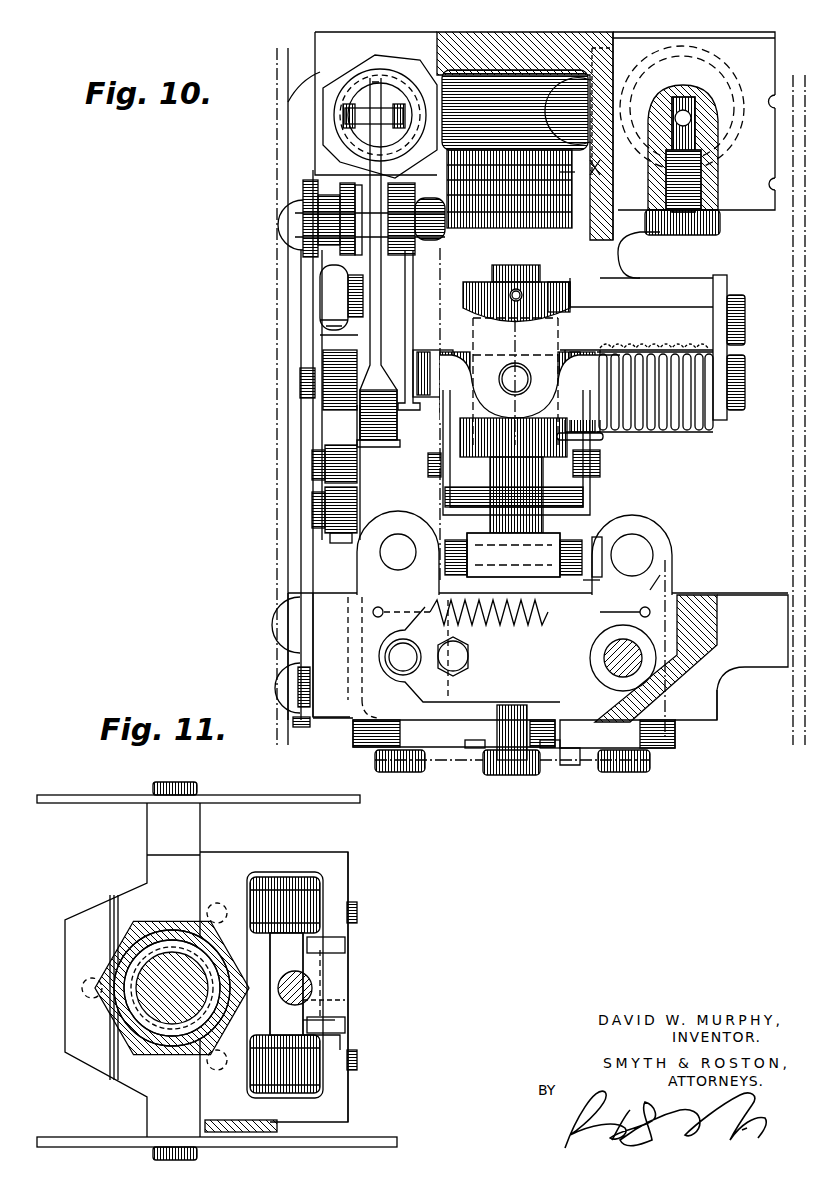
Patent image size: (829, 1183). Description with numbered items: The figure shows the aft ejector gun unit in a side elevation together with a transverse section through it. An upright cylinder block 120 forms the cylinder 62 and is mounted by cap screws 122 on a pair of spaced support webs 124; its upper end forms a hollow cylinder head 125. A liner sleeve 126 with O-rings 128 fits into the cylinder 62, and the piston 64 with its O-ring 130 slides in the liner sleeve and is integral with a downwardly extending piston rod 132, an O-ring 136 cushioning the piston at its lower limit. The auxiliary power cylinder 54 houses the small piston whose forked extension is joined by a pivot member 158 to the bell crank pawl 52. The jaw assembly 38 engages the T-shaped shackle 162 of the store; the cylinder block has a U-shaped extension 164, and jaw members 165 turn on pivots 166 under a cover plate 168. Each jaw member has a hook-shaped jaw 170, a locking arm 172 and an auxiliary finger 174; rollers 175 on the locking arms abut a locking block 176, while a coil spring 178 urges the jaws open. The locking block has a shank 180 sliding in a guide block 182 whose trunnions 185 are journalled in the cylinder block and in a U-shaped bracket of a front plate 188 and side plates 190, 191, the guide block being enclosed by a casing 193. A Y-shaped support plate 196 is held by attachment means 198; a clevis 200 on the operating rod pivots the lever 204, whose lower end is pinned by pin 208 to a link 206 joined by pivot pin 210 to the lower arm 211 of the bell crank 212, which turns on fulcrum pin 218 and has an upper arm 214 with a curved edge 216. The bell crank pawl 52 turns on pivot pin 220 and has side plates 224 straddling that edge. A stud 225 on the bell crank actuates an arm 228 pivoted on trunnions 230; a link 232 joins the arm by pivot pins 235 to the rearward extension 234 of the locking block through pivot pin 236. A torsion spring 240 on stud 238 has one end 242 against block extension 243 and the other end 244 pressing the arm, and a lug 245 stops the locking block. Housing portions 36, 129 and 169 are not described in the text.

In FIG. 10, the housing bracket 36 is at (332, 42).
In FIG. 11, the housing bracket 36 is at (127, 890).
In FIG. 10, the jaw assembly 38 is at (383, 730).
In FIG. 11, the jaw assembly 38 is at (349, 968).
In FIG. 10, the bell crank pawl 52 is at (385, 88).
In FIG. 10, the auxiliary power cylinder 54 is at (390, 56).
In FIG. 10, the cylinder 62 is at (604, 186).
In FIG. 11, the cylinder 62 is at (175, 920).
In FIG. 10, the piston 64 is at (525, 162).
In FIG. 10, the cylinder block 120 is at (624, 252).
In FIG. 11, the cylinder block 120 is at (145, 1105).
In FIG. 11, the cap screws 122 is at (195, 778).
In FIG. 10, the support webs 124 is at (278, 592).
In FIG. 11, the support webs 124 is at (85, 795).
In FIG. 10, the cylinder head 125 is at (552, 55).
In FIG. 10, the liner sleeve 126 is at (592, 238).
In FIG. 11, the liner sleeve 126 is at (120, 985).
In FIG. 10, the O-rings 128 is at (593, 170).
In FIG. 10, the side plate 129 is at (790, 698).
In FIG. 10, the O-ring 130 is at (566, 159).
In FIG. 10, the piston rod 132 is at (568, 745).
In FIG. 11, the piston rod 132 is at (160, 1012).
In FIG. 11, the O-ring 136 is at (140, 1000).
In FIG. 10, the pivot member 158 is at (345, 116).
In FIG. 10, the T-shaped shackle 162 is at (525, 703).
In FIG. 10, the U-shaped extension 164 is at (333, 718).
In FIG. 10, the jaw members 165 is at (438, 732).
In FIG. 10, the pivots 166 is at (400, 672).
In FIG. 11, the pivots 166 is at (355, 910).
In FIG. 10, the cover plate 168 is at (425, 700).
In FIG. 11, the cover plate 168 is at (350, 1045).
In FIG. 11, the bracket wall 169 is at (350, 877).
In FIG. 10, the hook-shaped jaw 170 is at (472, 740).
In FIG. 10, the locking arm 172 is at (664, 567).
In FIG. 11, the locking arm 172 is at (255, 893).
In FIG. 10, the auxiliary finger 174 is at (520, 638).
In FIG. 10, the rollers 175 is at (358, 550).
In FIG. 11, the rollers 175 is at (305, 880).
In FIG. 10, the locking block 176 is at (540, 561).
In FIG. 11, the locking block 176 is at (300, 958).
In FIG. 10, the coil spring 178 is at (572, 630).
In FIG. 10, the shank 180 is at (497, 470).
In FIG. 11, the shank 180 is at (313, 990).
In FIG. 10, the guide block 182 is at (480, 280).
In FIG. 10, the trunnions 185 is at (520, 370).
In FIG. 10, the front plate 188 is at (670, 312).
In FIG. 10, the side plate 190 is at (728, 277).
In FIG. 10, the side plate 191 is at (413, 328).
In FIG. 10, the casing 193 is at (570, 297).
In FIG. 10, the Y-shaped support plate 196 is at (313, 258).
In FIG. 10, the attachment means 198 is at (290, 668).
In FIG. 10, the clevis 200 is at (335, 295).
In FIG. 10, the lever 204 is at (320, 525).
In FIG. 10, the link 206 is at (343, 545).
In FIG. 10, the pin 208 is at (355, 495).
In FIG. 10, the pivot pin 210 is at (355, 472).
In FIG. 10, the lower arm 211 is at (352, 447).
In FIG. 10, the bell crank 212 is at (350, 338).
In FIG. 10, the upper arm 214 is at (380, 313).
In FIG. 10, the curved edge 216 is at (345, 360).
In FIG. 10, the fulcrum pin 218 is at (330, 375).
In FIG. 10, the pivot pin 220 is at (302, 222).
In FIG. 10, the side plates 224 is at (330, 280).
In FIG. 10, the stud 225 is at (430, 455).
In FIG. 10, the arm 228 is at (590, 492).
In FIG. 10, the trunnions 230 is at (592, 362).
In FIG. 10, the link 232 is at (590, 508).
In FIG. 11, the link 232 is at (345, 940).
In FIG. 10, the rearward extension 234 is at (440, 585).
In FIG. 11, the rearward extension 234 is at (345, 1003).
In FIG. 10, the pivot pins 235 is at (596, 470).
In FIG. 10, the pivot pin 236 is at (583, 588).
In FIG. 11, the pivot pin 236 is at (345, 1020).
In FIG. 10, the stud 238 is at (730, 385).
In FIG. 10, the torsion spring 240 is at (695, 435).
In FIG. 10, the spring end 242 is at (708, 336).
In FIG. 10, the block extension 243 is at (690, 283).
In FIG. 10, the spring end 244 is at (598, 445).
In FIG. 10, the lug 245 is at (565, 568).